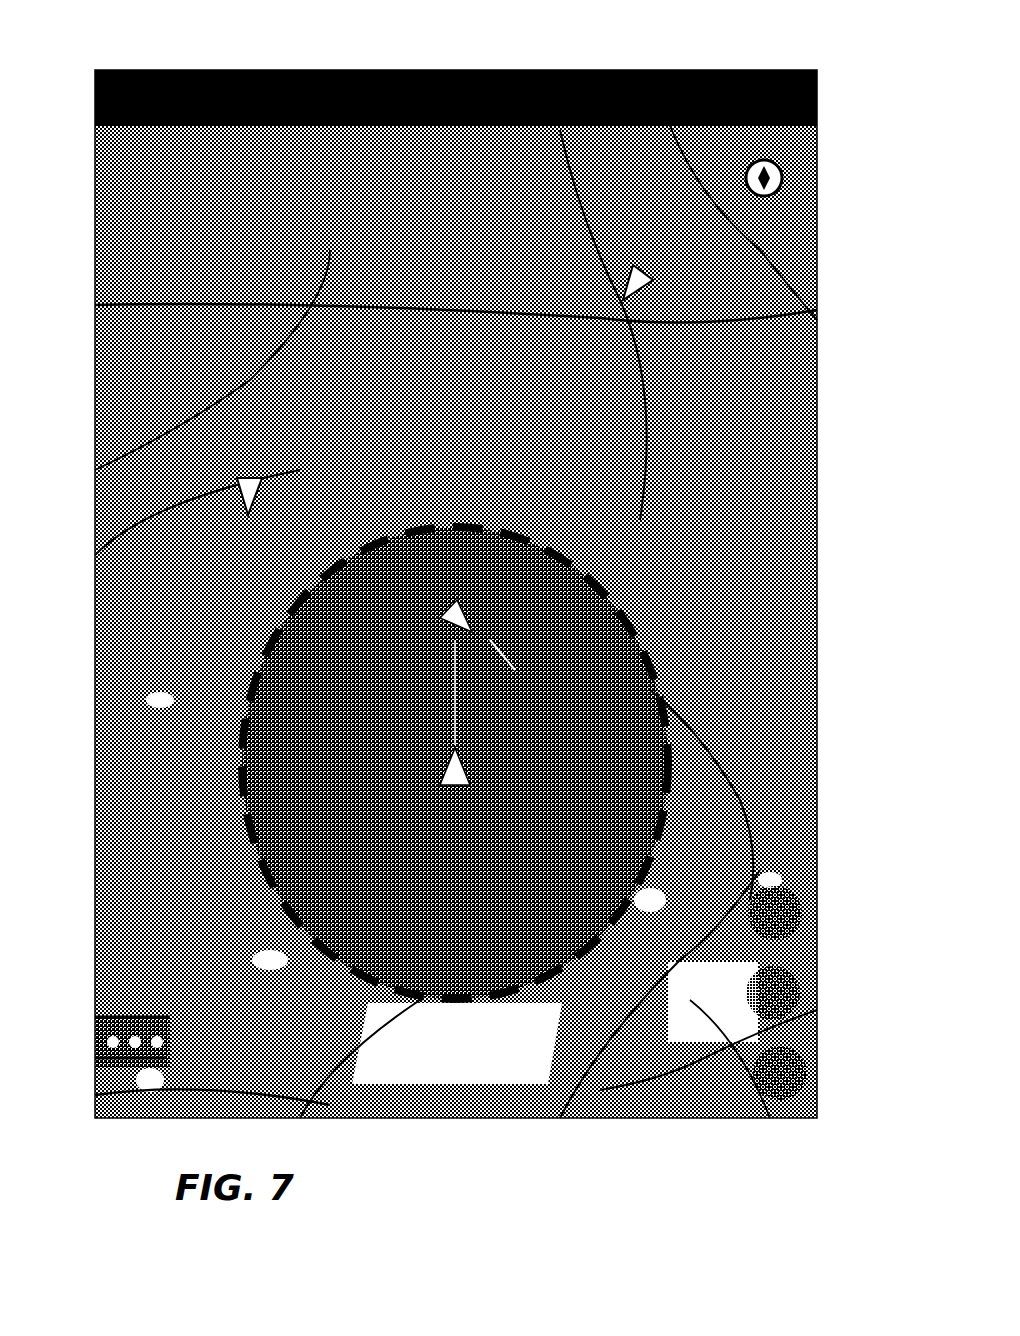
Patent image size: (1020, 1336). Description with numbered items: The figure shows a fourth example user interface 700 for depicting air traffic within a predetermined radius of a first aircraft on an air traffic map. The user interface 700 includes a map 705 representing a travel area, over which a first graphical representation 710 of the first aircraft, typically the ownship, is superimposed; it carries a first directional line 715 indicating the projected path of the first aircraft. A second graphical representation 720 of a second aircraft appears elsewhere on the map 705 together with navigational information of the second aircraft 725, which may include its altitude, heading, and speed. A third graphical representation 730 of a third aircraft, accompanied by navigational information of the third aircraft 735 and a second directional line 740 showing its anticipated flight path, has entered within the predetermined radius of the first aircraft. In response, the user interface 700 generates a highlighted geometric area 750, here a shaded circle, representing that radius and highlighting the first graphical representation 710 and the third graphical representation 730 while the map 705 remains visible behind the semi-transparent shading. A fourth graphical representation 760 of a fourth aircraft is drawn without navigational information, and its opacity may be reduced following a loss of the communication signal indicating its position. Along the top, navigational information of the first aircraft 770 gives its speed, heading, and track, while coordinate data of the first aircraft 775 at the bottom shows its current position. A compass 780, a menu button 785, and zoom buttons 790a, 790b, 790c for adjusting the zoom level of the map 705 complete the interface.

The user interface 700 is at (164, 36).
The map 705 is at (115, 242).
The first graphical representation 710 is at (452, 770).
The first directional line 715 is at (455, 690).
The second graphical representation 720 is at (240, 490).
The navigational information of the second aircraft 725 is at (200, 432).
The third graphical representation 730 is at (470, 612).
The navigational information of the third aircraft 735 is at (525, 568).
The second directional line 740 is at (505, 655).
The highlighted geometric area 750 is at (665, 760).
The fourth graphical representation 760 is at (652, 268).
The navigational information of the first aircraft 770 is at (545, 70).
The coordinate data of the first aircraft 775 is at (372, 1103).
The compass 780 is at (784, 168).
The menu button 785 is at (165, 1022).
The first zoom button 790a is at (785, 912).
The second zoom button 790b is at (783, 995).
The third zoom button 790c is at (778, 1078).